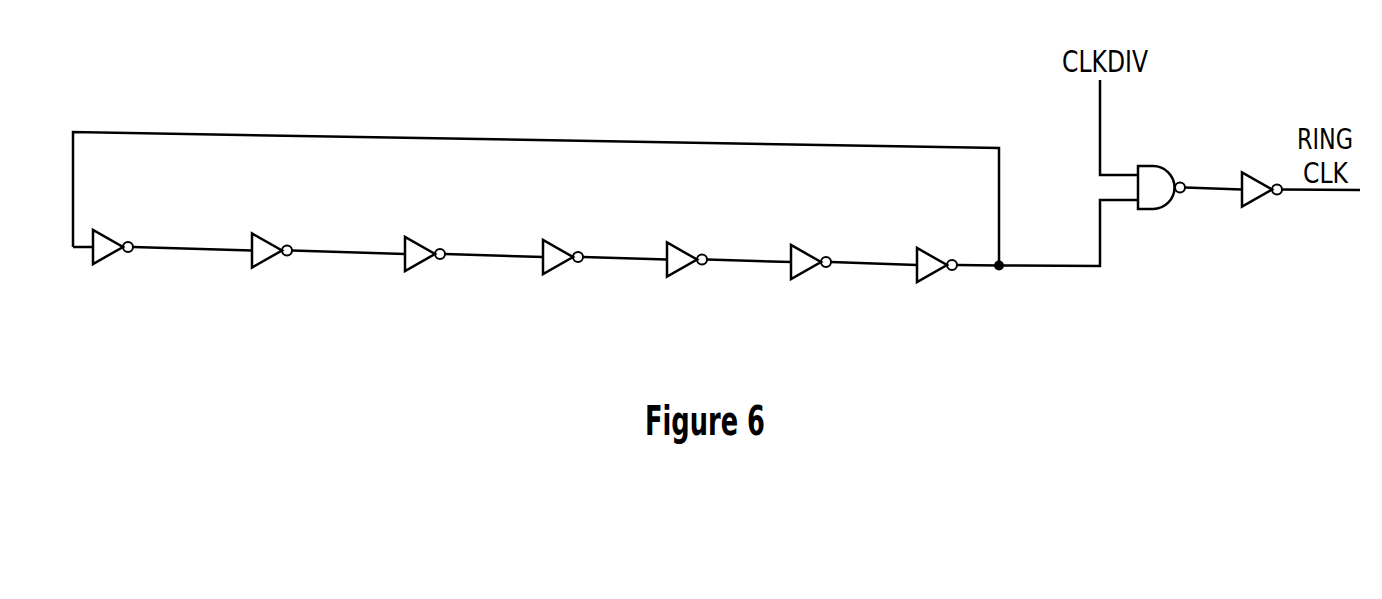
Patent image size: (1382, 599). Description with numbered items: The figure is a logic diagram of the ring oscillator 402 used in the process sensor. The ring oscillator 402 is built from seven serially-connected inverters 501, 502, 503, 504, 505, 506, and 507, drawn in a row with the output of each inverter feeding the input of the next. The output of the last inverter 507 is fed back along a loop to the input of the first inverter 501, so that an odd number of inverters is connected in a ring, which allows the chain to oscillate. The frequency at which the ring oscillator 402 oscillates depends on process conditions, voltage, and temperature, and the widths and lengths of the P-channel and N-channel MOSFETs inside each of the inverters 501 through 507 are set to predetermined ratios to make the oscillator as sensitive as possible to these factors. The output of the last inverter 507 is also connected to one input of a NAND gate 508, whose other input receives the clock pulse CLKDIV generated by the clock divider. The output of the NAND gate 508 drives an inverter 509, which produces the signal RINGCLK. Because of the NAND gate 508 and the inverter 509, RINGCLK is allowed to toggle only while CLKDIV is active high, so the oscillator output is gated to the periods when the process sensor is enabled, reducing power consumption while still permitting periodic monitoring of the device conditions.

The ring oscillator 402 is at (619, 84).
The inverter 501 is at (105, 258).
The inverter 502 is at (265, 262).
The inverter 503 is at (418, 265).
The inverter 504 is at (557, 268).
The inverter 505 is at (680, 270).
The inverter 506 is at (805, 273).
The inverter 507 is at (930, 276).
The NAND gate 508 is at (1148, 209).
The inverter 509 is at (1257, 202).